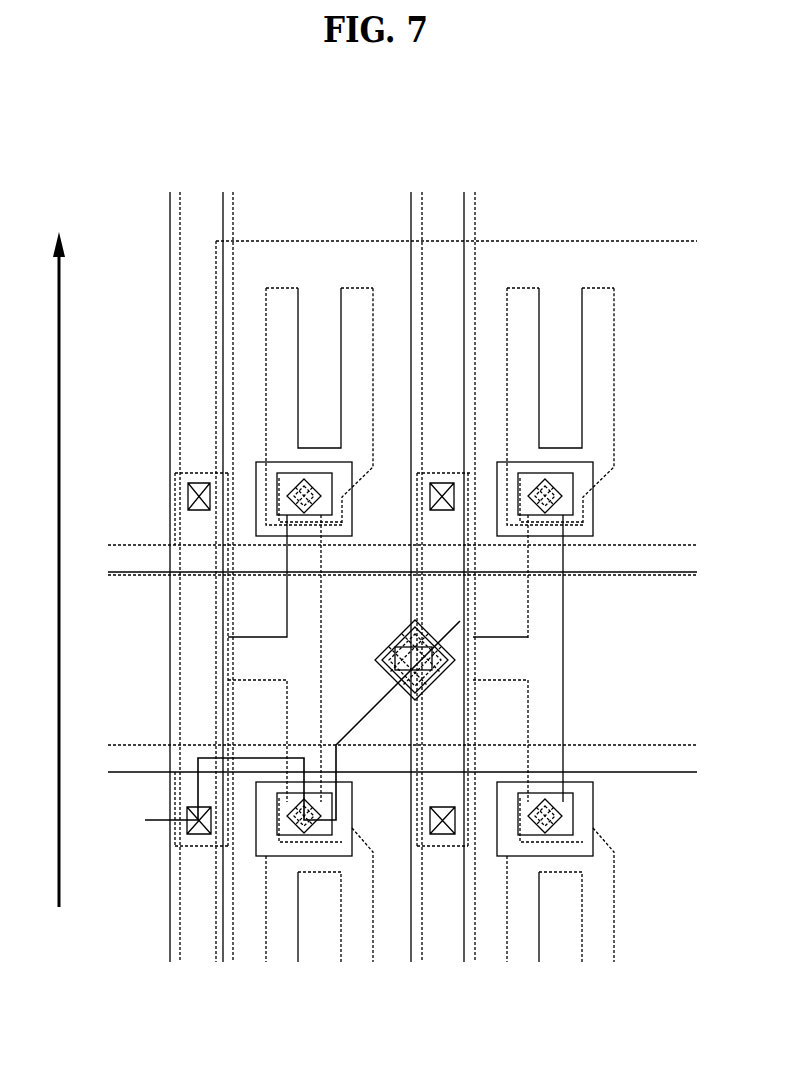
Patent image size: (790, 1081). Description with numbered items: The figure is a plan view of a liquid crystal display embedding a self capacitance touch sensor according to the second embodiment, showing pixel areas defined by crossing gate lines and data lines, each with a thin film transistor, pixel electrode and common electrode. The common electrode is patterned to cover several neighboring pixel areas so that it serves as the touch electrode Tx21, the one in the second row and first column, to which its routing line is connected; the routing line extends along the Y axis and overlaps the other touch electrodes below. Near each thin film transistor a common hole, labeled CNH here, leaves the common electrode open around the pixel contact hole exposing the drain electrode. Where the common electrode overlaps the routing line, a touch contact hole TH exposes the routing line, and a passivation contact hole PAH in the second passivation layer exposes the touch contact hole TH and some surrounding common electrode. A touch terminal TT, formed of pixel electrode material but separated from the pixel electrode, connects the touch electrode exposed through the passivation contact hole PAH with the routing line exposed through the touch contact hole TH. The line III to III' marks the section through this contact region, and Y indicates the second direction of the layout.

The 2row 1column touch electrode Tx21 is at (345, 241).
The contact hole CNH is at (619, 518).
The touch contact hole TH is at (411, 648).
The touch terminal TT is at (382, 651).
The passivation contact hole PAH is at (428, 693).
The section line III is at (296, 720).
The section line III' is at (442, 602).
The Y-axis Y is at (59, 557).